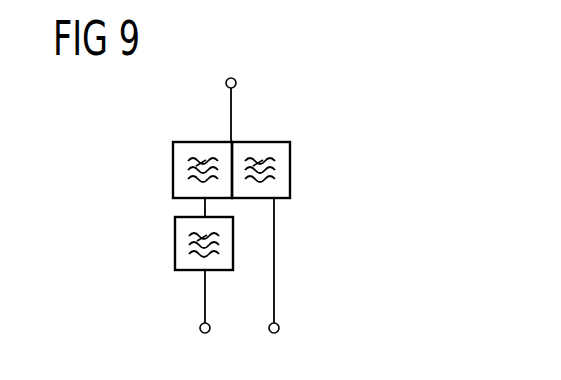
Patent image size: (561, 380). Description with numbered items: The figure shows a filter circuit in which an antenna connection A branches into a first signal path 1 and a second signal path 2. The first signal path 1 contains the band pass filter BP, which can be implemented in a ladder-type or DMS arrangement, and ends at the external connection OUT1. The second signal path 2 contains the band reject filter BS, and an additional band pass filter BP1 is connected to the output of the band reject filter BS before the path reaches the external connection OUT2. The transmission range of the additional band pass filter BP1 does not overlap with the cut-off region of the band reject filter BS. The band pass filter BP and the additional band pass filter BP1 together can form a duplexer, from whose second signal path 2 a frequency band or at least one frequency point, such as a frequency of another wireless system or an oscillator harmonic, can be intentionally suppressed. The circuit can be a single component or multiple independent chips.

The antenna connection A is at (232, 94).
The band reject filter BS is at (203, 142).
The band pass filter BP is at (260, 142).
The additional band pass filter BP1 is at (175, 243).
The first signal path 1 is at (274, 243).
The second signal path 2 is at (205, 310).
The external connection OUT1 is at (279, 331).
The external connection OUT2 is at (200, 330).